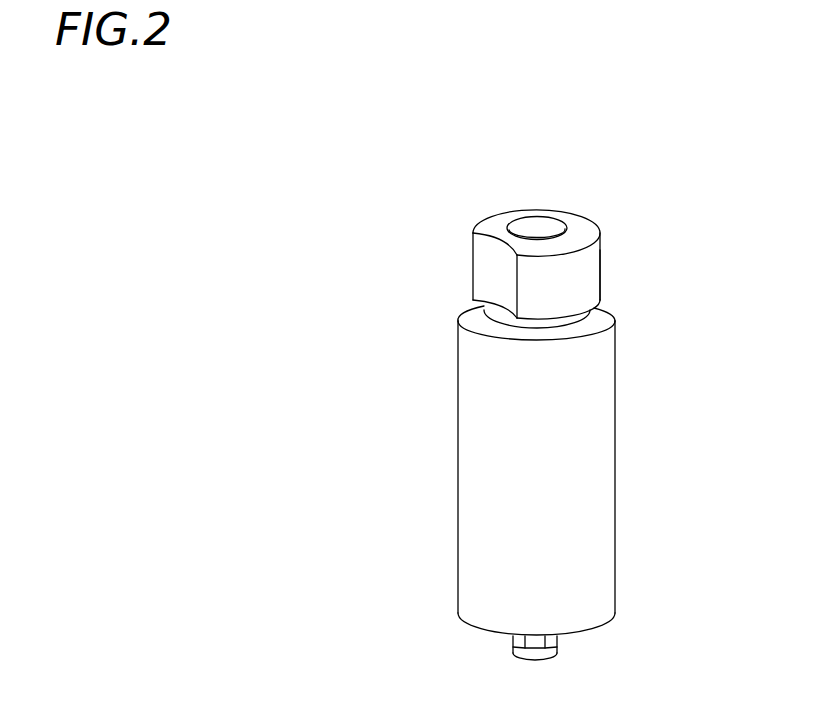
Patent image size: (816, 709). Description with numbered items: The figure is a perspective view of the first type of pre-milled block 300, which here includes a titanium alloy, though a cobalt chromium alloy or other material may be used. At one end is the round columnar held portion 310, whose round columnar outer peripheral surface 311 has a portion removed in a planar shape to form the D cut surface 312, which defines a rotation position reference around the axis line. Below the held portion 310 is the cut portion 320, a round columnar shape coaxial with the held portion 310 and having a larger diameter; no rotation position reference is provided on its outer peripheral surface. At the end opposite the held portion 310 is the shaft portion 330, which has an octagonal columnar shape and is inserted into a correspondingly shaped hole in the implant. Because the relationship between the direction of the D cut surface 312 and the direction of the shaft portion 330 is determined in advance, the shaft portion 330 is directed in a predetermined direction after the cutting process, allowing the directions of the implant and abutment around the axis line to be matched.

The pre-milled block 300 is at (546, 381).
The held portion 310 is at (538, 264).
The outer peripheral surface 311 is at (587, 278).
The D cut surface 312 is at (473, 260).
The cut portion 320 is at (615, 453).
The shaft portion 330 is at (560, 638).